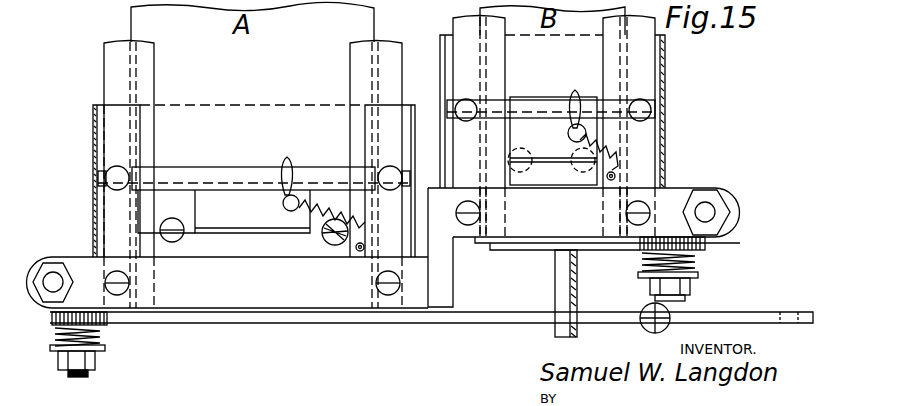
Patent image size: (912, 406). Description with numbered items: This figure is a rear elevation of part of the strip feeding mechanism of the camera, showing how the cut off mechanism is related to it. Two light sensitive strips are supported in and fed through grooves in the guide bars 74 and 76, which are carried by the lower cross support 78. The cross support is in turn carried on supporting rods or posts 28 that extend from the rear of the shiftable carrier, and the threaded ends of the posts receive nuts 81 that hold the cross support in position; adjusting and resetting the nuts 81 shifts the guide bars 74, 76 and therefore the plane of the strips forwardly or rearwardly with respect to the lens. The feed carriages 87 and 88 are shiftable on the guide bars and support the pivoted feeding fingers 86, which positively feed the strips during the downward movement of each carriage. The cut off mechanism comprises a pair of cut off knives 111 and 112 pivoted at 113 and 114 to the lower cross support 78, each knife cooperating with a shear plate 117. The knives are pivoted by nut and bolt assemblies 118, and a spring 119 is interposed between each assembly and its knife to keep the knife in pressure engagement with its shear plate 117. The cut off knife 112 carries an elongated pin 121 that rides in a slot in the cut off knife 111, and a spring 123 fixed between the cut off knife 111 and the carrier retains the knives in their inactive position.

The guide bar 74 is at (112, 61).
The guide bar 76 is at (465, 22).
The lower cross support 78 is at (453, 296).
The nut 81 is at (50, 270).
The supporting rod 28 is at (55, 288).
The feeding finger 86 is at (376, 170).
The feed carriage 87 is at (93, 125).
The feed carriage 88 is at (666, 68).
The cut off knife 111 is at (385, 323).
The cut off knife 112 is at (533, 251).
The pivot 113 is at (80, 380).
The pivot 114 is at (685, 300).
The shear plate 117 is at (222, 305).
The nut and bolt assembly 118 is at (95, 360).
The spring 119 is at (100, 337).
The elongated pin 121 is at (572, 298).
The spring 123 is at (649, 313).